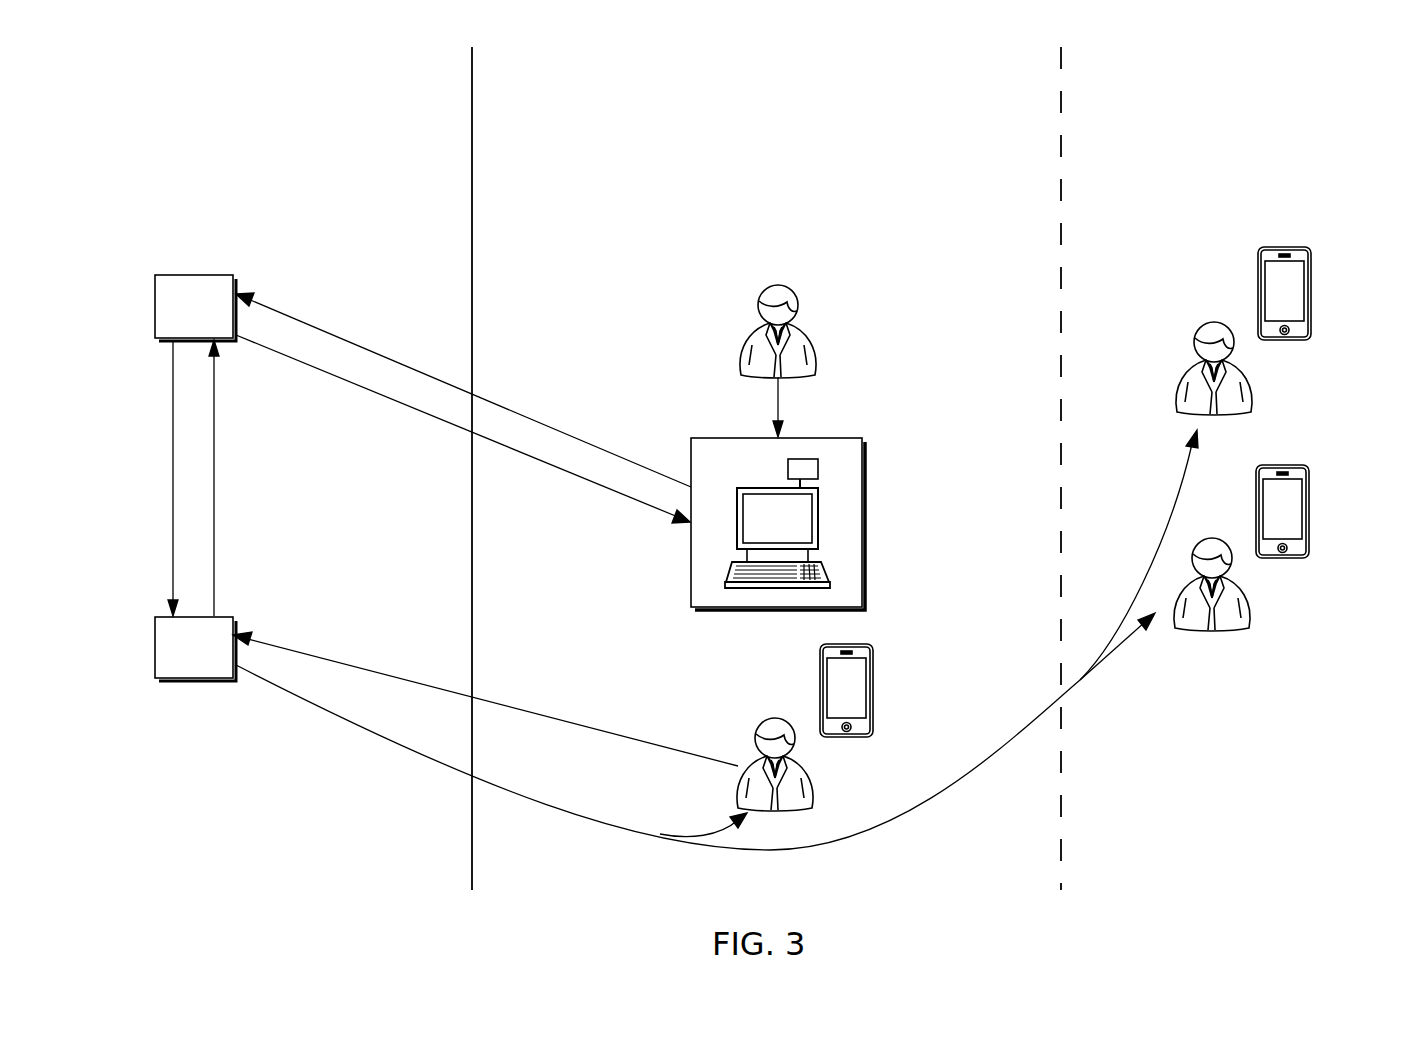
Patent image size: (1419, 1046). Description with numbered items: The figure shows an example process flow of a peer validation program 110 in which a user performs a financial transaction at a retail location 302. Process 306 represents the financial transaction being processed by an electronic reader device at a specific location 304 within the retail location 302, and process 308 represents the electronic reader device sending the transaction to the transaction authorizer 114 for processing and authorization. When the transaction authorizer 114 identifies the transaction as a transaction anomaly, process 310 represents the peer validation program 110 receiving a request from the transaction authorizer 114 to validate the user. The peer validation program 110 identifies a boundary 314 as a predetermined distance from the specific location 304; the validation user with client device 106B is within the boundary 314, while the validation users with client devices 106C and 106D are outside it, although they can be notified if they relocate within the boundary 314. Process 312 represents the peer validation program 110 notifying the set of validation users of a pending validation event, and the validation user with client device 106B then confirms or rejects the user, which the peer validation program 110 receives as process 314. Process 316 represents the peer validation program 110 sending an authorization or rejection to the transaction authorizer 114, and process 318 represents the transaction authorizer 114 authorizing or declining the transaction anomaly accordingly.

The retail location 302 is at (642, 468).
The specific location 304 is at (866, 523).
The process of processing the financial transaction 306 is at (779, 403).
The process of sending the financial transaction 308 is at (562, 432).
The process of receiving a validation request 310 is at (170, 478).
The process of notifying validation users 312 is at (319, 706).
The boundary 314 is at (1061, 105).
The process of sending authorization or rejection 316 is at (216, 477).
The process of authorizing or declining the transaction anomaly 318 is at (561, 472).
The peer validation program 110 is at (195, 649).
The transaction authorizer 114 is at (195, 308).
The client device 106B is at (874, 690).
The client device 106C is at (1311, 295).
The client device 106D is at (1309, 512).